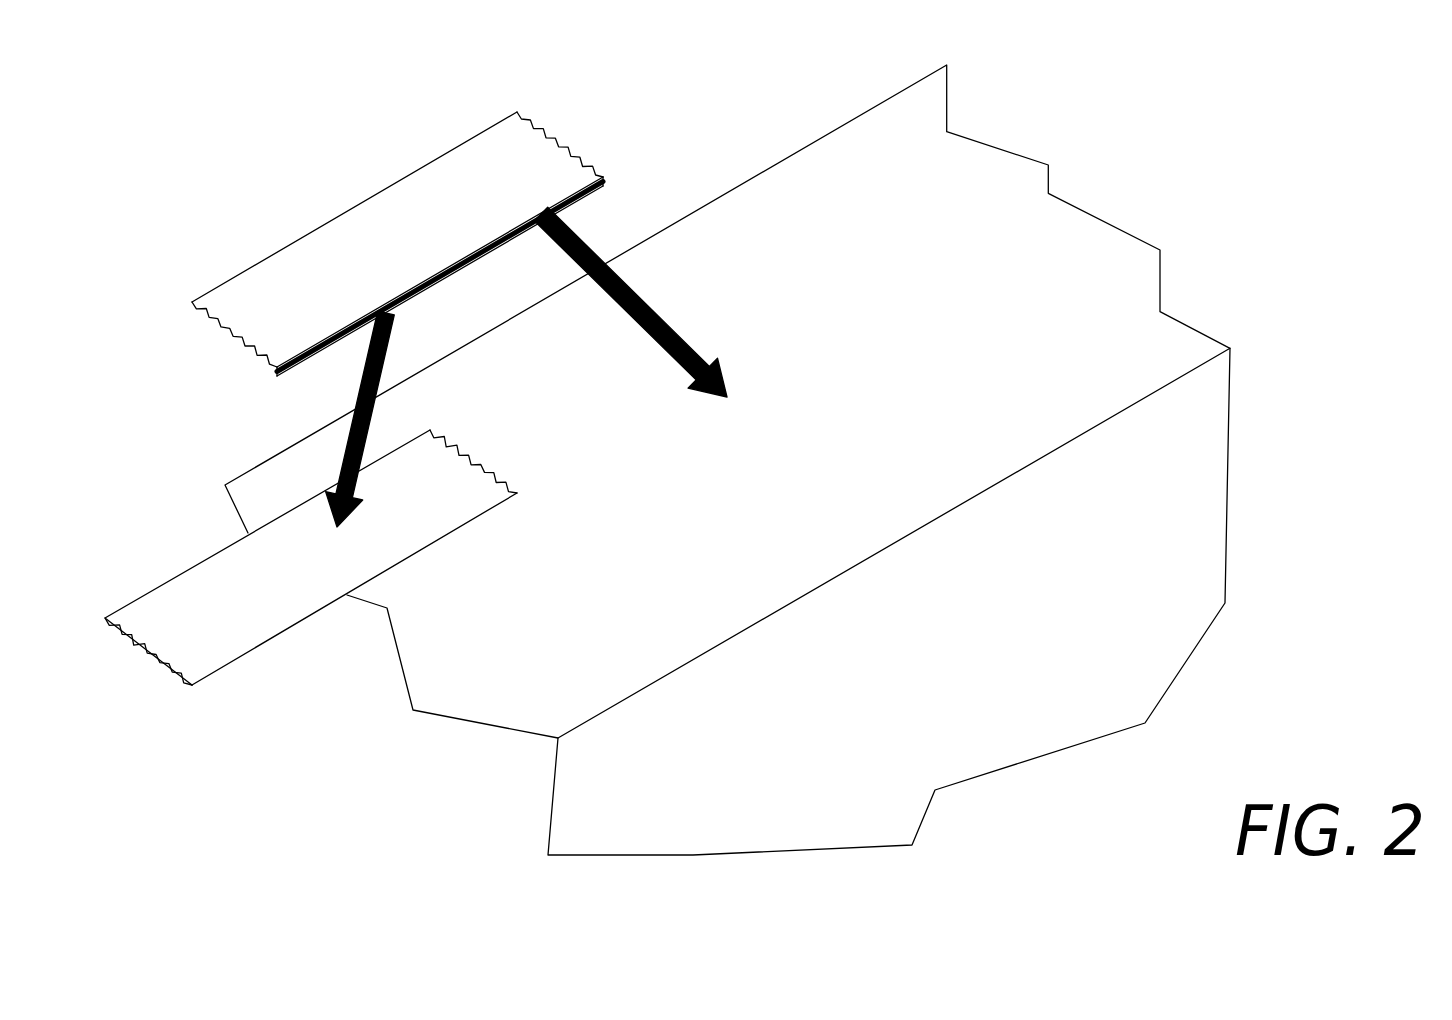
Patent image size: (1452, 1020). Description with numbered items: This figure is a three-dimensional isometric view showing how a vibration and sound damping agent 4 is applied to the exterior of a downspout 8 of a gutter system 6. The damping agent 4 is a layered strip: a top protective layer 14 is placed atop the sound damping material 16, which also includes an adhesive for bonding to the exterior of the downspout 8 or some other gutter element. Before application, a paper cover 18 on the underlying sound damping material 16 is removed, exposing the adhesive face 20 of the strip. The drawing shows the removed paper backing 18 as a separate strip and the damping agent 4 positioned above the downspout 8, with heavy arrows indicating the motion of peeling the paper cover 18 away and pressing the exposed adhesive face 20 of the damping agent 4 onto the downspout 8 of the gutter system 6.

The vibration and sound damping agent 4 is at (425, 244).
The gutter system 6 is at (665, 136).
The downspout 8 is at (983, 463).
The top protective layer 14 is at (427, 287).
The sound damping material 16 is at (429, 291).
The paper cover 18 is at (410, 547).
The adhesive face 20 is at (585, 208).